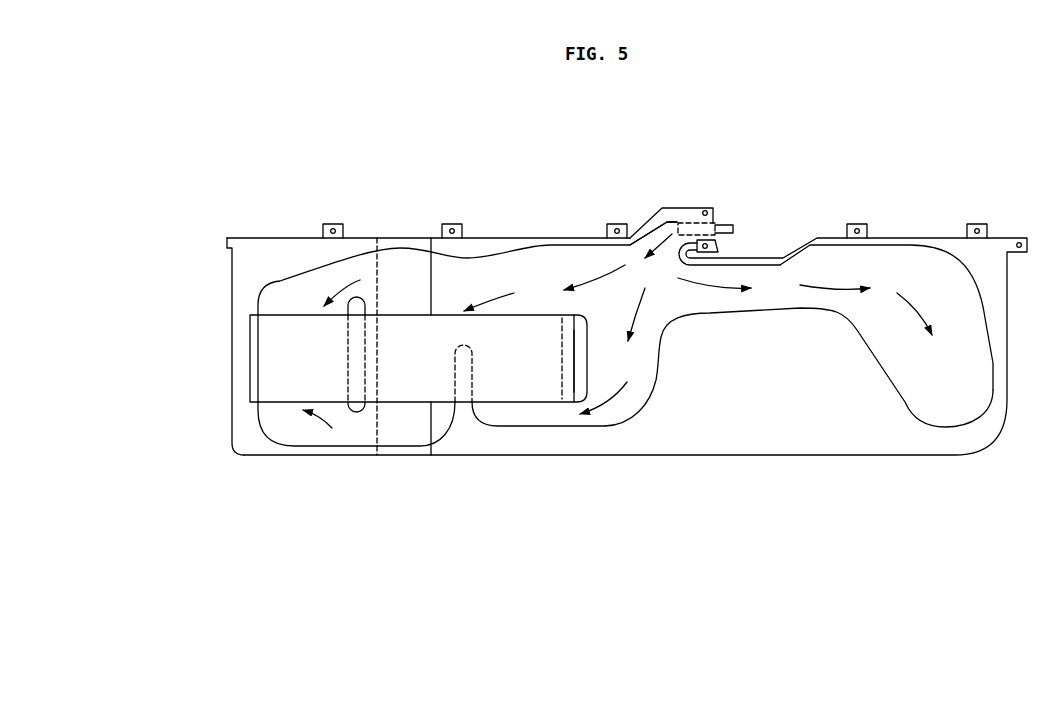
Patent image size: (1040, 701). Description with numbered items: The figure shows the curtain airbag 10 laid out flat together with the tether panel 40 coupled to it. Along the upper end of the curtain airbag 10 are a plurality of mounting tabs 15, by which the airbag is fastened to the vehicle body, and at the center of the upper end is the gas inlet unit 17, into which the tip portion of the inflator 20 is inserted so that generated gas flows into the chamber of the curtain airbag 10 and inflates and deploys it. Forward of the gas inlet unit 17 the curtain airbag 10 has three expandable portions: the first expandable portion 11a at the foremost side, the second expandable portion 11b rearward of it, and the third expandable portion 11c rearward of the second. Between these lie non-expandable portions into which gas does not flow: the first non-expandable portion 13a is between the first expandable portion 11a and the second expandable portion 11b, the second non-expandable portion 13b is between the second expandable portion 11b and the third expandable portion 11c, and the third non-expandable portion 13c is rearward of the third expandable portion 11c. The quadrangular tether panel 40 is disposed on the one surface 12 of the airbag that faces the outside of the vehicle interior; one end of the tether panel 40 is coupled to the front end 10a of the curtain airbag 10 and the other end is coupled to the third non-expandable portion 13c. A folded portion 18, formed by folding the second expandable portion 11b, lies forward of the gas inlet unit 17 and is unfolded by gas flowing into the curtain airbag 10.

The curtain airbag 10 is at (896, 205).
The front end 10a is at (242, 353).
The first expandable portion 11a is at (315, 440).
The second expandable portion 11b is at (414, 434).
The third expandable portion 11c is at (543, 417).
The one surface 12 is at (727, 418).
The first non-expandable portion 13a is at (357, 412).
The second non-expandable portion 13b is at (465, 410).
The third non-expandable portion 13c is at (572, 400).
The mounting tabs 15 is at (331, 224).
The gas inlet unit 17 is at (687, 208).
The folded portion 18 is at (403, 286).
The inflator 20 is at (723, 226).
The tether panel 40 is at (283, 340).